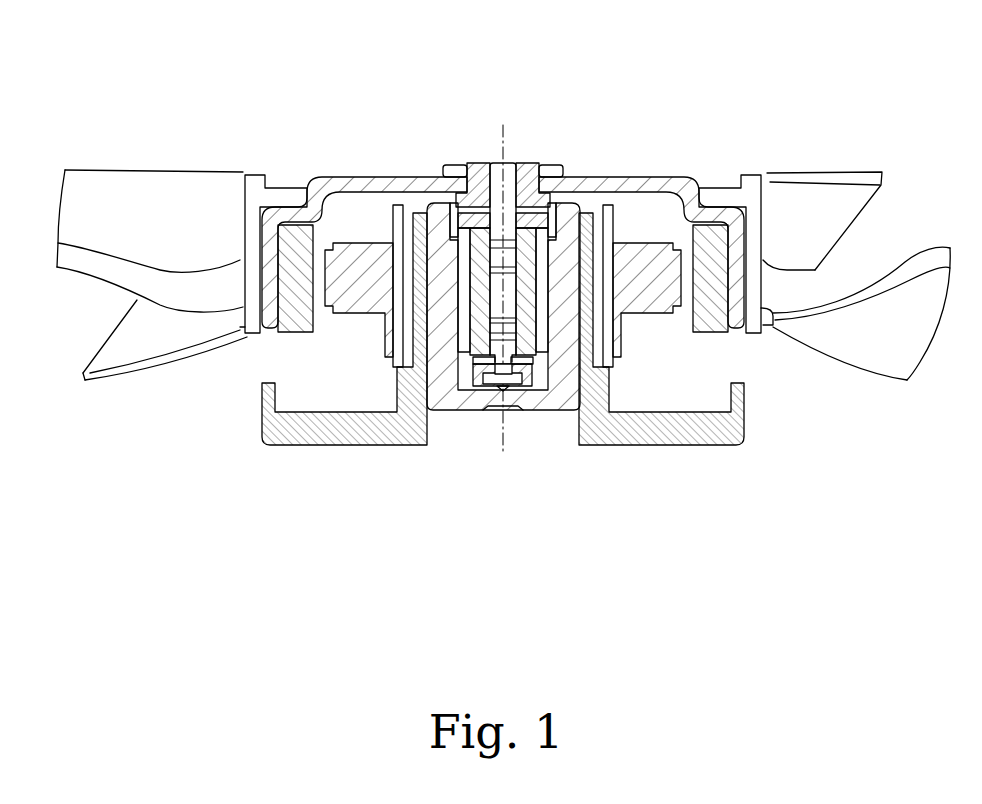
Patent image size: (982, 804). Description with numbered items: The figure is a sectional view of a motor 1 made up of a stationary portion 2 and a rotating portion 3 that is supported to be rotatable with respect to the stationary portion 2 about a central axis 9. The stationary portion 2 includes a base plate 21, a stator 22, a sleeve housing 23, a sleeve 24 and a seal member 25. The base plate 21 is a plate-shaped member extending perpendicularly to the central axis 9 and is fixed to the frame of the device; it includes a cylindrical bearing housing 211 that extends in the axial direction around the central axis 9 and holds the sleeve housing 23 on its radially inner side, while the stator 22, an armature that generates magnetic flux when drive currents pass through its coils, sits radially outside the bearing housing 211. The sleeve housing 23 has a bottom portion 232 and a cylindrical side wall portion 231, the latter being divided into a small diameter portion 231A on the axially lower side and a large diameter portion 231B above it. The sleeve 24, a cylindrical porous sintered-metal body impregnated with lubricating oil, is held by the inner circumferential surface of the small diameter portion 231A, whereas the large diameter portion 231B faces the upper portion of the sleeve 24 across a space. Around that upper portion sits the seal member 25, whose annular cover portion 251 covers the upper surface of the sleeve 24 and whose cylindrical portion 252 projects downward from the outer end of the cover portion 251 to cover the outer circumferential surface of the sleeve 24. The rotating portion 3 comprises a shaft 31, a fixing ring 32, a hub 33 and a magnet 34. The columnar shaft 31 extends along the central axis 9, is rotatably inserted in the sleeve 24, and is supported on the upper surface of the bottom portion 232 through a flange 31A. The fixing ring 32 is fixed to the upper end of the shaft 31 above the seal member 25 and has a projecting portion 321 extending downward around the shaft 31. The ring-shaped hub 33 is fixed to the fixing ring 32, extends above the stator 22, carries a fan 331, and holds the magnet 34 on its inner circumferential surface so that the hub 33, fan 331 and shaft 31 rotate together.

The motor 1 is at (307, 86).
The stationary portion 2 is at (321, 460).
The rotating portion 3 is at (353, 150).
The central axis 9 is at (502, 124).
The base plate 21 is at (672, 433).
The bearing housing 211 is at (605, 345).
The stator 22 is at (368, 312).
The sleeve housing 23 is at (490, 582).
The side wall portion 231 is at (518, 543).
The small diameter portion 231A is at (541, 360).
The large diameter portion 231B is at (556, 345).
The bottom portion 232 is at (490, 405).
The sleeve 24 is at (450, 372).
The seal member 25 is at (460, 104).
The cover portion 251 is at (466, 245).
The cylindrical portion 252 is at (450, 238).
The shaft 31 is at (510, 160).
The flange 31A is at (474, 367).
The fixing ring 32 is at (532, 165).
The projecting portion 321 is at (586, 176).
The hub 33 is at (318, 175).
The fan 331 is at (872, 360).
The magnet 34 is at (287, 322).